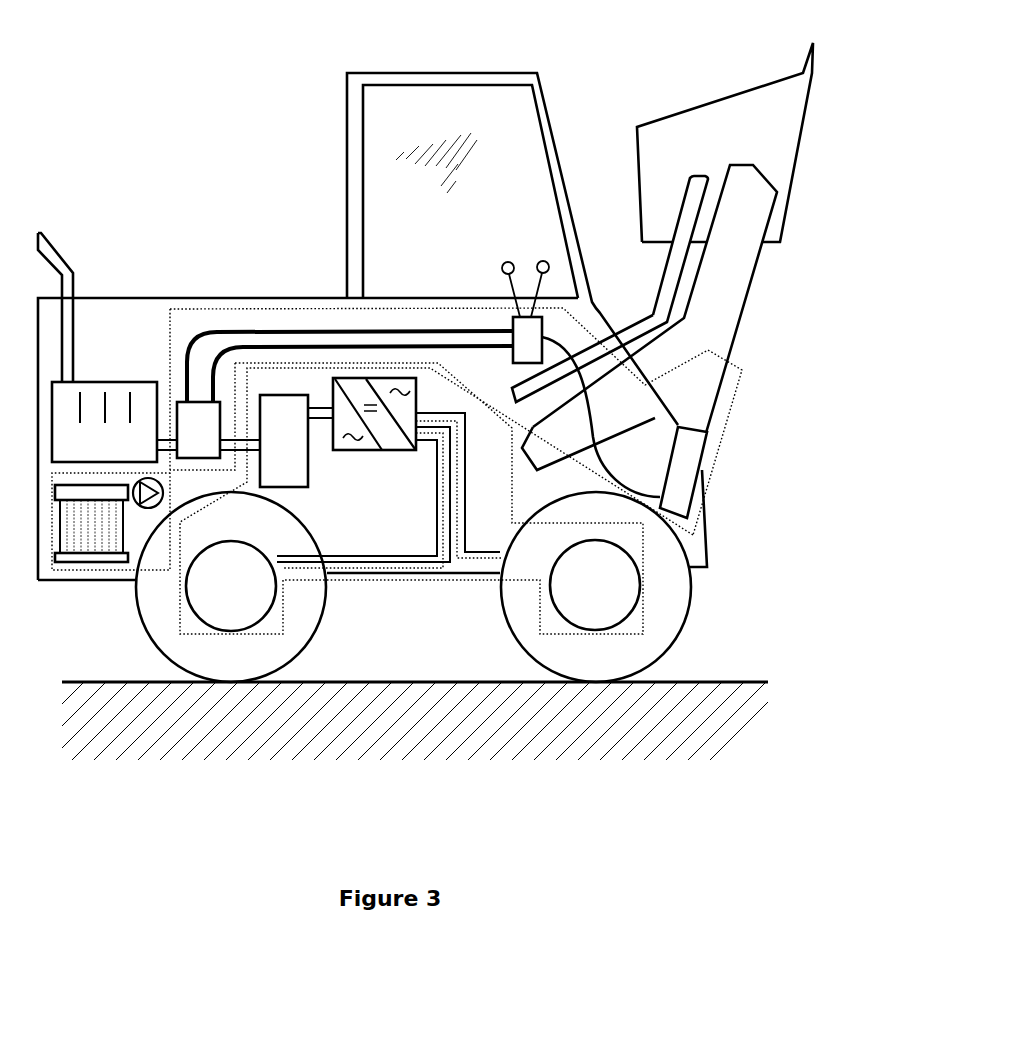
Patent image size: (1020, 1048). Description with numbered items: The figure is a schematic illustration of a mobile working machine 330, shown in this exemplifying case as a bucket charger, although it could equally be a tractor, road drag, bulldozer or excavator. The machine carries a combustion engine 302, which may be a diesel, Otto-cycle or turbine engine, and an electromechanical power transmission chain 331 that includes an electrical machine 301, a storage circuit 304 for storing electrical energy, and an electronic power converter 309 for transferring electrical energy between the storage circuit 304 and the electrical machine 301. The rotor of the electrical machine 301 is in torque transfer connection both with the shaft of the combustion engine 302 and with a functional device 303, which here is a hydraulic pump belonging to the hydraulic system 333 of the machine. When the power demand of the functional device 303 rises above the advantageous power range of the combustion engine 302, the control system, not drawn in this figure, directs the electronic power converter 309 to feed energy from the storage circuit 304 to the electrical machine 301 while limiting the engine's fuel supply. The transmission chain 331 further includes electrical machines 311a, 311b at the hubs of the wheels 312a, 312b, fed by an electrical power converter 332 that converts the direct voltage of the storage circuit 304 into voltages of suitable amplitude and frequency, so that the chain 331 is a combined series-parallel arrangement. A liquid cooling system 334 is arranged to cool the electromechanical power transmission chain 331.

The electrical machine 301 is at (267, 473).
The combustion engine 302 is at (88, 453).
The functional device 303 is at (182, 442).
The storage circuit 304 is at (402, 451).
The electronic power converter 309 is at (350, 451).
The electrical machine at wheel hub 311a is at (211, 604).
The electrical machine at wheel hub 311b is at (576, 609).
The wheel 312a is at (260, 666).
The wheel 312b is at (621, 666).
The working machine 330 is at (331, 153).
The electromechanical power transmission chain 331 is at (453, 582).
The electrical power converter 332 is at (416, 392).
The hydraulic system 333 is at (723, 442).
The liquid cooling system 334 is at (90, 572).